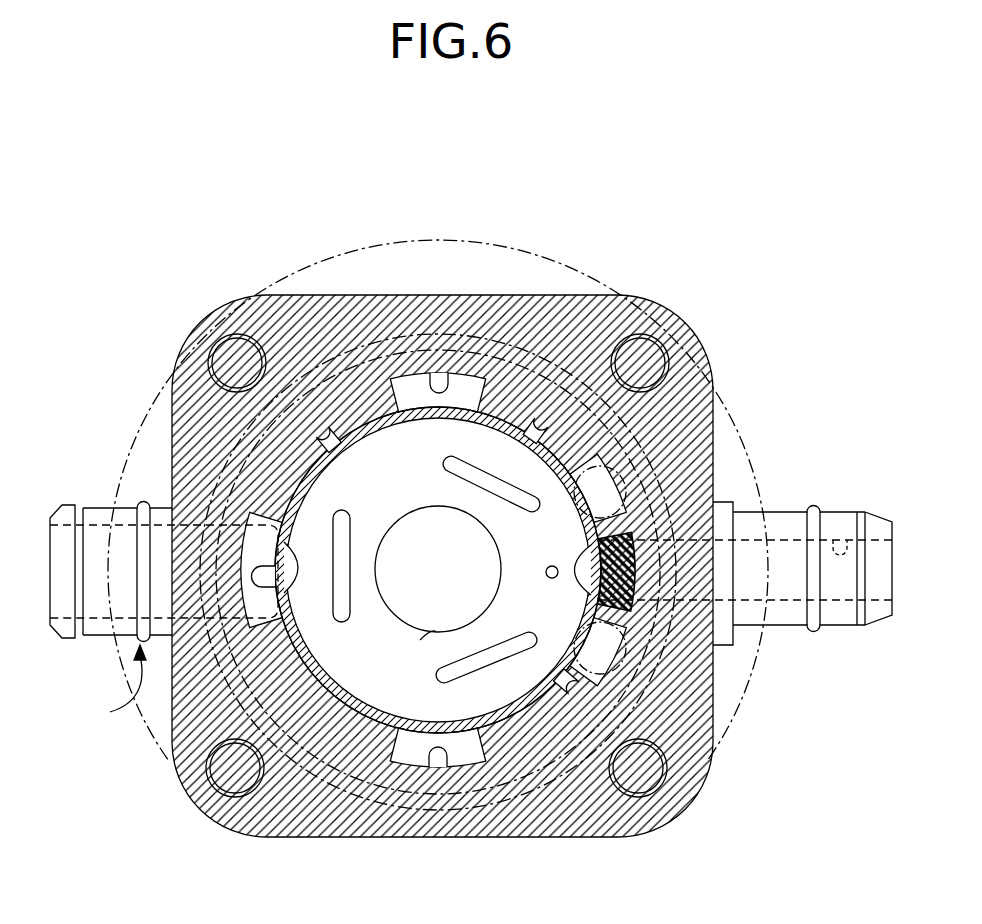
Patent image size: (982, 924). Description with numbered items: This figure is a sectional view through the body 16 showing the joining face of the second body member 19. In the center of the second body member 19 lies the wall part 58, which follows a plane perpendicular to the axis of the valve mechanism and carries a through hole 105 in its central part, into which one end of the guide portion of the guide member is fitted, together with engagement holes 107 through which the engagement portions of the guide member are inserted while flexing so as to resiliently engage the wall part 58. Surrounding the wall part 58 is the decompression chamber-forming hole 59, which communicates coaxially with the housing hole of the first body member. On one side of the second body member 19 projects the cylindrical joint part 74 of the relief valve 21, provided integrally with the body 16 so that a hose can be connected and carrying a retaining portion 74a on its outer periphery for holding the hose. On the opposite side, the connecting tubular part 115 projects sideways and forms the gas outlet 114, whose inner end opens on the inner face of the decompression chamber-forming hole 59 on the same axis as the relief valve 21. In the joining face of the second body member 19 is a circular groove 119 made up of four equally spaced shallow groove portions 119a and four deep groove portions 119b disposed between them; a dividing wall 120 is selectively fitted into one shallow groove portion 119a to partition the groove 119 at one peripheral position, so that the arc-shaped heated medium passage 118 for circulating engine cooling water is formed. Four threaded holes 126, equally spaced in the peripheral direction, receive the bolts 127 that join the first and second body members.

The body 16 is at (536, 288).
The second body member 19 is at (320, 300).
The relief valve 21 is at (116, 686).
The wall part 58 is at (496, 536).
The decompression chamber-forming hole 59 is at (660, 432).
The joint part 74 is at (108, 625).
The retaining portion 74a is at (75, 506).
The through hole 105 is at (420, 640).
The engagement holes 107 is at (516, 488).
The gas outlet 114 is at (843, 538).
The connecting tubular part 115 is at (785, 514).
The heated medium passage 118 is at (540, 716).
The circular groove 119 is at (342, 726).
The shallow groove portions 119a is at (438, 374).
The deep groove portions 119b is at (578, 392).
The dividing wall 120 is at (570, 578).
The threaded holes 126 is at (250, 348).
The bolts 127 is at (228, 348).